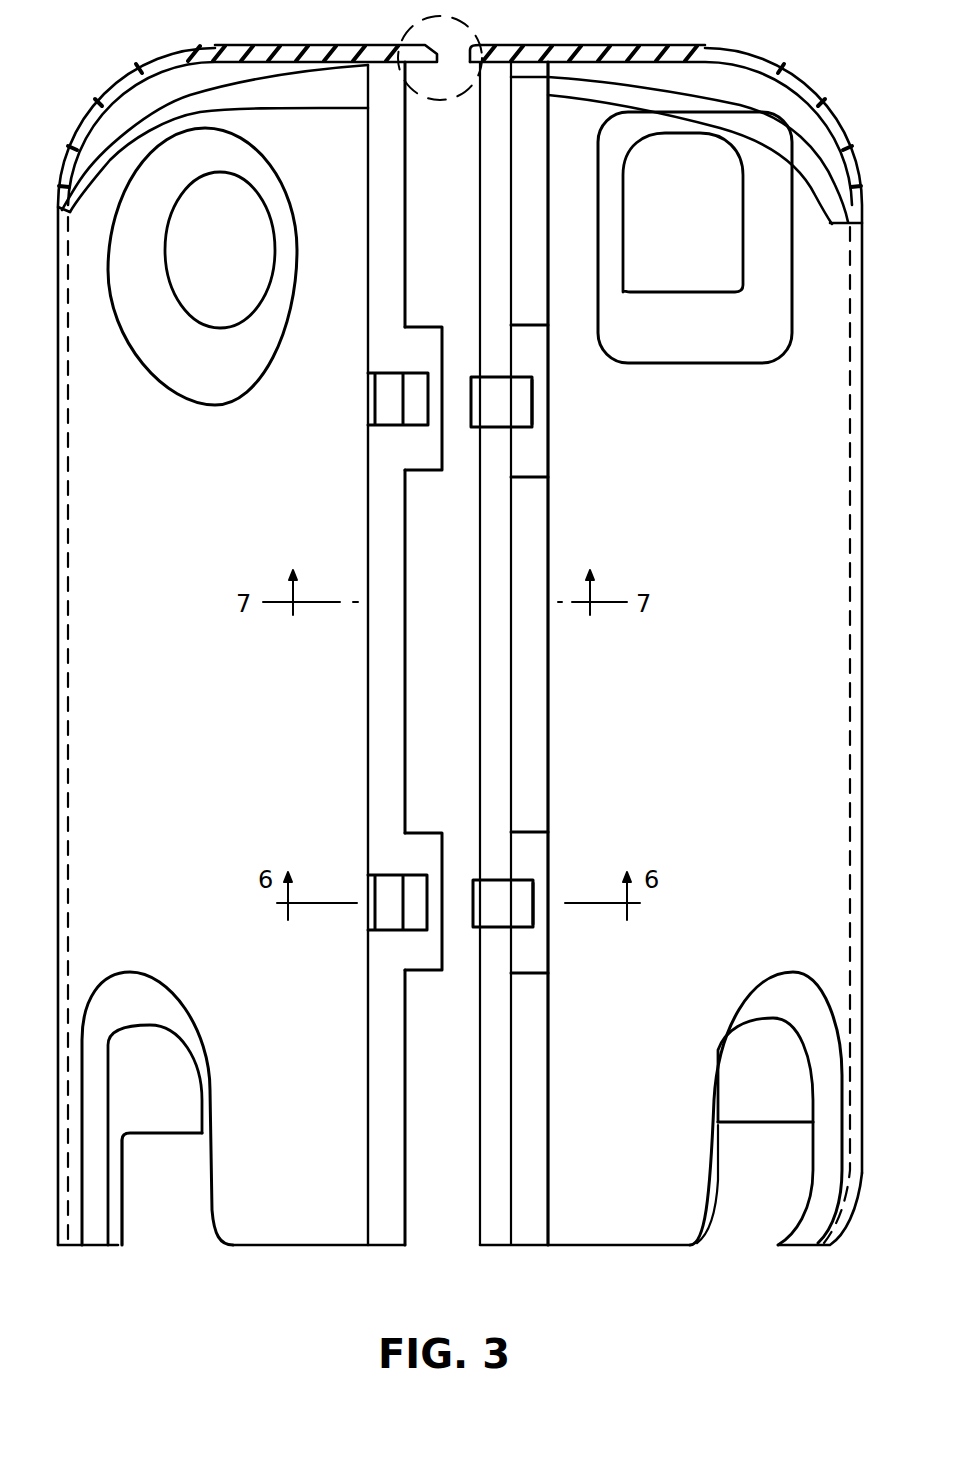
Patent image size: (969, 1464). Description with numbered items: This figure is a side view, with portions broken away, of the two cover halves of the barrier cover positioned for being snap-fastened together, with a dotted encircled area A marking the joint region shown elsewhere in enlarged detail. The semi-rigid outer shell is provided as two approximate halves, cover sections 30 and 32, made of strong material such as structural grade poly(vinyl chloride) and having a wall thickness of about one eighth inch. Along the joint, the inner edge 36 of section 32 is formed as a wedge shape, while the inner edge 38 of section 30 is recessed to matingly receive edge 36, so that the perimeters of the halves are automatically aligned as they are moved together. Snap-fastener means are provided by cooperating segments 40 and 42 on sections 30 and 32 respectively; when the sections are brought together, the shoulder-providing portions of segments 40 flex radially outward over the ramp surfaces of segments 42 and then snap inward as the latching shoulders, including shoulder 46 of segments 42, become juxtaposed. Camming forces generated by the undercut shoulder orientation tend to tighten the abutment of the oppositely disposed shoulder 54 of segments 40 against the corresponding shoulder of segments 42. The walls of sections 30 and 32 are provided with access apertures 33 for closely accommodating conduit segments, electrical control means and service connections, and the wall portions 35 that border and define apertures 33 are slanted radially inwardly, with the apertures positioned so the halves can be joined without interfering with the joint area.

The cover section 30 is at (200, 703).
The cover section 32 is at (730, 706).
The access aperture 33 is at (225, 284).
The wall portion bordering access aperture 35 is at (160, 360).
The inner edge 36 is at (495, 1017).
The inner edge 38 is at (392, 733).
The segment 40 is at (405, 47).
The segment 42 is at (548, 47).
The latching shoulder 46 is at (532, 383).
The shoulder 54 is at (378, 412).
The encircled area A is at (490, 30).